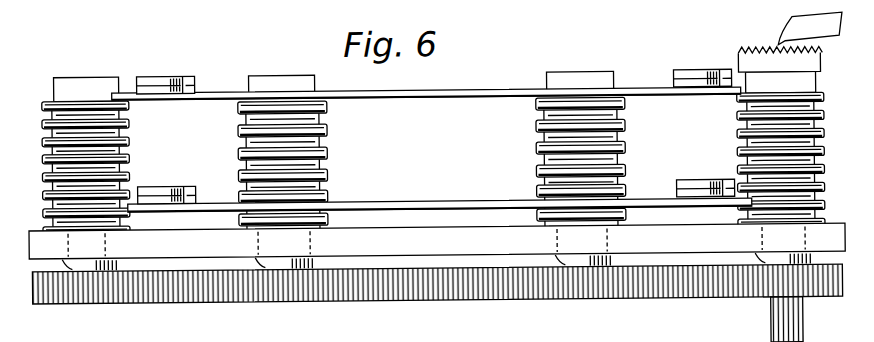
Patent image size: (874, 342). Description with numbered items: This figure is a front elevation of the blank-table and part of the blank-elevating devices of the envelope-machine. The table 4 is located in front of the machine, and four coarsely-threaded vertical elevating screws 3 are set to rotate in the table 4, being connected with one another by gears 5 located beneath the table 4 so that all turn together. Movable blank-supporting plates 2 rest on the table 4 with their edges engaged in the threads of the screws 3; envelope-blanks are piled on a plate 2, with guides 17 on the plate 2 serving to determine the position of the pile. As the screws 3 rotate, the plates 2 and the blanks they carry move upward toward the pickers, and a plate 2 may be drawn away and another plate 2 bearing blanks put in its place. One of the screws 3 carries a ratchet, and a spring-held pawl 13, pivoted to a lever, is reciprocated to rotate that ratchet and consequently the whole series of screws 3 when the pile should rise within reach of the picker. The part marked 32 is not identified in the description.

The blank-supporting plate 2 is at (440, 100).
The vertical elevating screw 3 is at (434, 154).
The table 4 is at (437, 247).
The gear 5 is at (244, 304).
The pawl 13 is at (810, 28).
The guide 17 is at (172, 75).
The serrated block 32 is at (780, 59).